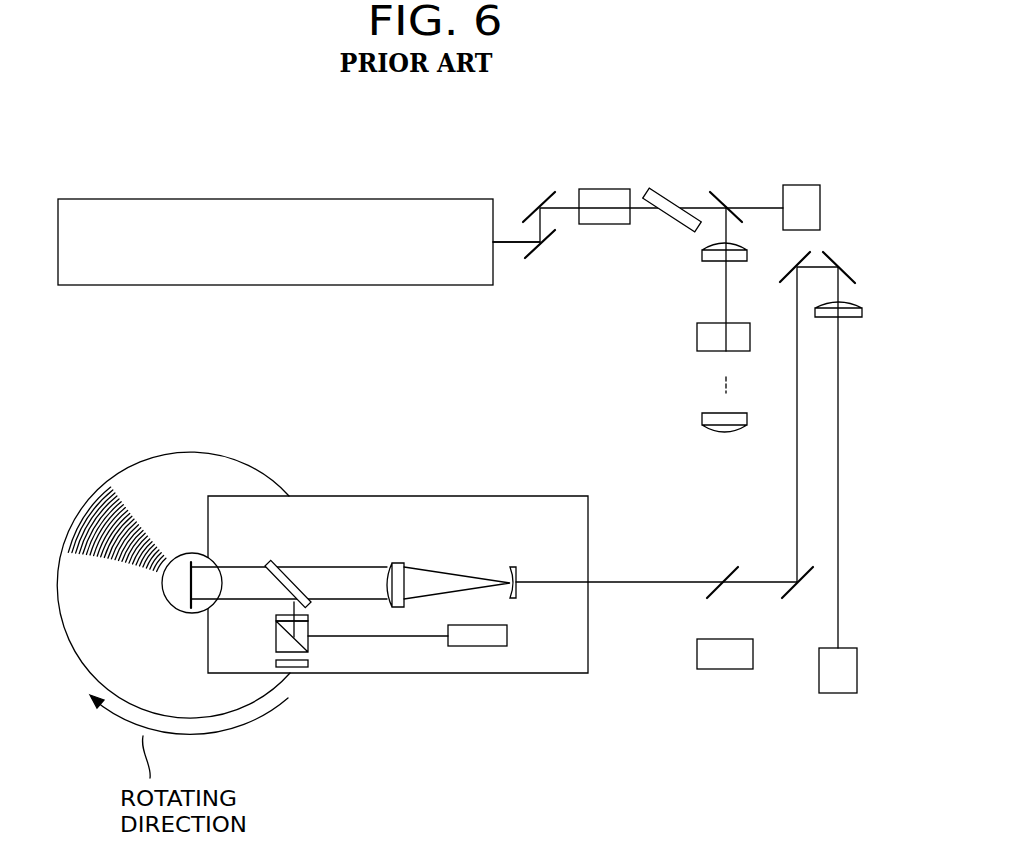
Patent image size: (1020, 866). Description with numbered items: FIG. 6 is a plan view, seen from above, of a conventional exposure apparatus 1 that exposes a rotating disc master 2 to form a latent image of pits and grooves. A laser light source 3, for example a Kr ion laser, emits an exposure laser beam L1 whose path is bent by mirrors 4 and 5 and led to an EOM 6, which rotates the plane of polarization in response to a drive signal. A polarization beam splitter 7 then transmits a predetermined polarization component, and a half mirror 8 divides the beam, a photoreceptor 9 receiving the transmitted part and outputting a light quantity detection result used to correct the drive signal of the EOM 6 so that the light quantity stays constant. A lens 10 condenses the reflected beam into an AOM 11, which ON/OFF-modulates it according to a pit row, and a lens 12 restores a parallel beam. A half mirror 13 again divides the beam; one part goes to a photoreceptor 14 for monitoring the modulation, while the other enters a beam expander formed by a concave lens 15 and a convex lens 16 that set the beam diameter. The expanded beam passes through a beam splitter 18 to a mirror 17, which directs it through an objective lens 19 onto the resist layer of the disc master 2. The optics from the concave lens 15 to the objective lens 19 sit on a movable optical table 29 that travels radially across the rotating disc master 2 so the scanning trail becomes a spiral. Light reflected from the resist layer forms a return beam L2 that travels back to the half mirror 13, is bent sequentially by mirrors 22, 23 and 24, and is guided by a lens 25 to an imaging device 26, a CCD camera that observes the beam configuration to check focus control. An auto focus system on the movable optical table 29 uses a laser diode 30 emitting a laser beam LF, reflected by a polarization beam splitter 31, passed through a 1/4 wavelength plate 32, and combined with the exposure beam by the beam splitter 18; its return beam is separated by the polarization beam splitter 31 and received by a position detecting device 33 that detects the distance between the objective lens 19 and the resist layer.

The exposure apparatus 1 is at (172, 150).
The disc master 2 is at (135, 487).
The laser light source 3 is at (452, 197).
The mirror 4 is at (548, 238).
The mirror 5 is at (543, 190).
The EOM (electro optic modulator) 6 is at (604, 189).
The polarization beam splitter 7 is at (669, 196).
The half mirror 8 is at (728, 190).
The photoreceptor 9 is at (801, 185).
The lens 10 is at (702, 256).
The AOM (acousto optic modulator) 11 is at (697, 338).
The lens 12 is at (702, 420).
The half mirror 13 is at (728, 572).
The photoreceptor 14 is at (697, 655).
The concave lens 15 is at (512, 566).
The convex lens 16 is at (397, 562).
The mirror 17 is at (188, 592).
The beam splitter 18 is at (277, 562).
The objective lens 19 is at (186, 562).
The mirror 22 is at (797, 596).
The mirror 23 is at (784, 278).
The mirror 24 is at (850, 266).
The lens 25 is at (862, 313).
The imaging device 26 is at (858, 667).
The movable optical table 29 is at (513, 496).
The laser diode 30 is at (508, 635).
The polarization beam splitter 31 is at (310, 645).
The 1/4 wavelength plate 32 is at (310, 617).
The position detecting device 33 is at (276, 663).
The exposure laser beam L1 is at (514, 248).
The return beam L2 is at (797, 489).
The laser beam LF is at (390, 637).